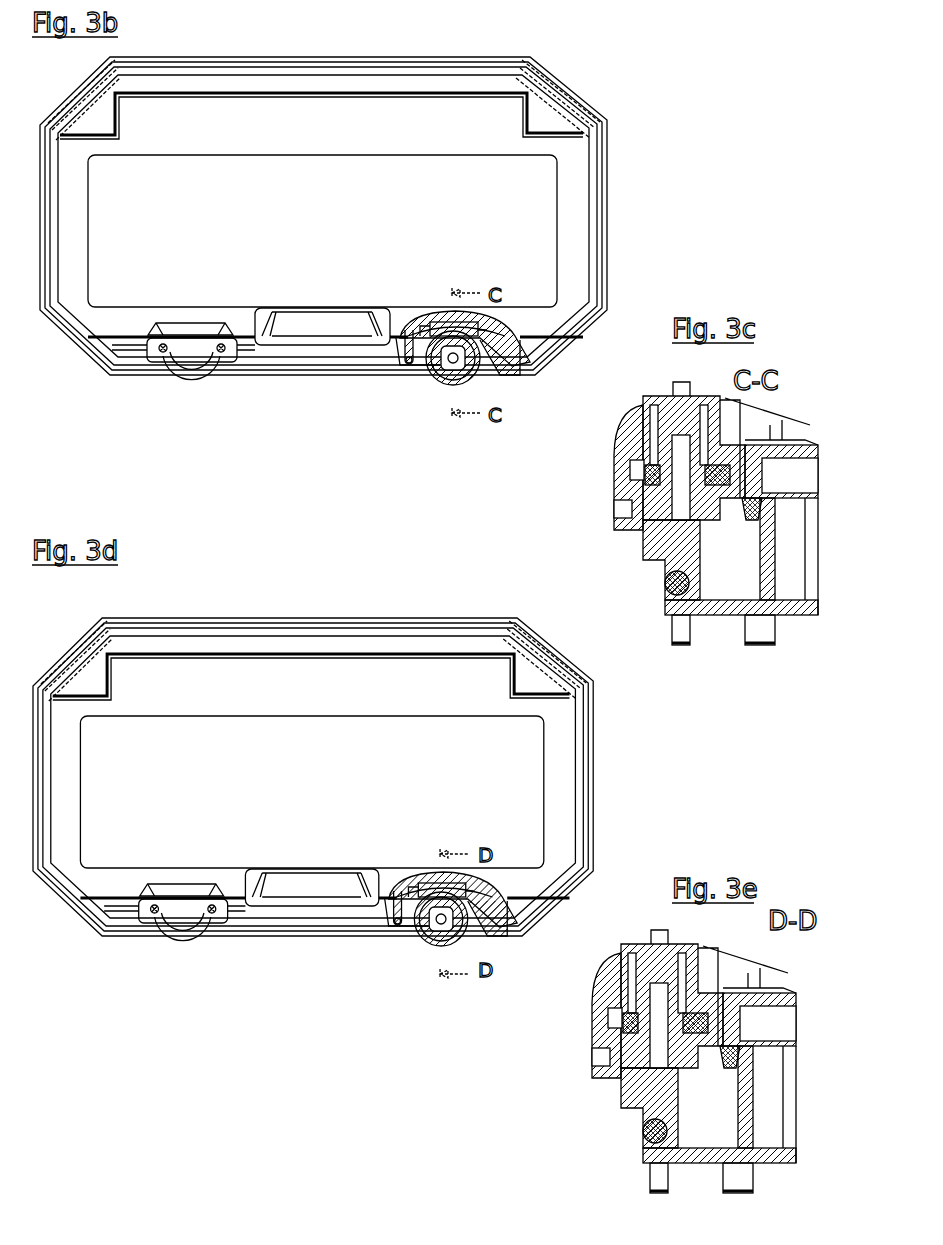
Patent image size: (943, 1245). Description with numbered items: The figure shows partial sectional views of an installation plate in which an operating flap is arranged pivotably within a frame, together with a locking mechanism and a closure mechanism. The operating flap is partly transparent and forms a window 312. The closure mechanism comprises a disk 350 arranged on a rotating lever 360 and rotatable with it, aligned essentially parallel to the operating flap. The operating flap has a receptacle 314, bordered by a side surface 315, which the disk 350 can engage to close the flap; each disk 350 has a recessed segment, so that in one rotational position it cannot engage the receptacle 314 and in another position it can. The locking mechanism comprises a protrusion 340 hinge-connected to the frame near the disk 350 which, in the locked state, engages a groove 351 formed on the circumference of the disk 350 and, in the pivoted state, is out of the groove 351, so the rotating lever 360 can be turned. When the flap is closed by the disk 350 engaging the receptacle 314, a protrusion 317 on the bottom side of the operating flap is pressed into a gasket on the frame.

In FIG. 3B, the window 312 is at (496, 203).
In FIG. 3B, the receptacle 314 is at (487, 322).
In FIG. 3B, the side surface 315 is at (397, 342).
In FIG. 3D, the side surface 315 is at (385, 902).
In FIG. 3C, the protrusion 317 is at (744, 506).
In FIG. 3B, the protrusion 340 is at (425, 345).
In FIG. 3D, the protrusion 340 is at (413, 906).
In FIG. 3B, the disk 350 is at (483, 362).
In FIG. 3D, the disk 350 is at (475, 922).
In FIG. 3B, the groove 351 is at (465, 378).
In FIG. 3D, the groove 351 is at (453, 938).
In FIG. 3B, the rotating lever 360 is at (205, 366).